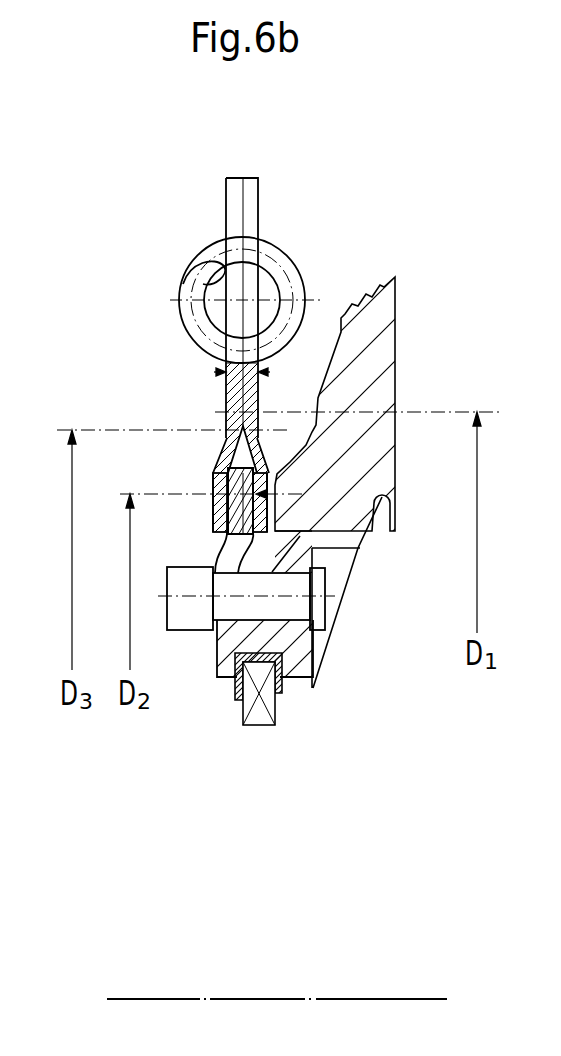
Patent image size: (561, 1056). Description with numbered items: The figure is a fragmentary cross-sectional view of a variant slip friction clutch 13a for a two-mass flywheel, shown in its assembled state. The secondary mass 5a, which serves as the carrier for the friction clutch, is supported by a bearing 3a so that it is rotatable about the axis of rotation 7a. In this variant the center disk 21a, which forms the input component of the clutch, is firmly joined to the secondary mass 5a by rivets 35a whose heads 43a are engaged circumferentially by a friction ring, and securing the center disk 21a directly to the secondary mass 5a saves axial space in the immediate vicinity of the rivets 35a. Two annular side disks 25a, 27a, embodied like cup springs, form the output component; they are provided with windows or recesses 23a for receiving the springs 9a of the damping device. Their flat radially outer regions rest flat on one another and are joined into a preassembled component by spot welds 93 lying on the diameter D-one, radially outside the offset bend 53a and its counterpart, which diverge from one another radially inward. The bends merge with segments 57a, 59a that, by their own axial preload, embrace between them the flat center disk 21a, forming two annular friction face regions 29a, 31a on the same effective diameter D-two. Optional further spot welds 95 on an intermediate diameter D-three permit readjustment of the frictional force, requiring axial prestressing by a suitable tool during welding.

The bearing 3a is at (257, 722).
The secondary mass 5a is at (373, 341).
The axis of rotation 7a is at (332, 998).
The springs 9a is at (190, 257).
The slip friction clutch 13a is at (202, 508).
The center disk 21a is at (222, 650).
The windows or recesses 23a is at (250, 221).
The side disk 25a is at (270, 372).
The side disk 27a is at (214, 372).
The friction face region 29a is at (268, 494).
The friction face region 31a is at (228, 481).
The rivets 35a is at (328, 615).
The rivet heads 43a is at (193, 624).
The offset bend 53a is at (270, 439).
The segment 57a is at (268, 525).
The segment 59a is at (222, 446).
The spot welds 93 is at (244, 412).
The spot welds 95 is at (241, 428).